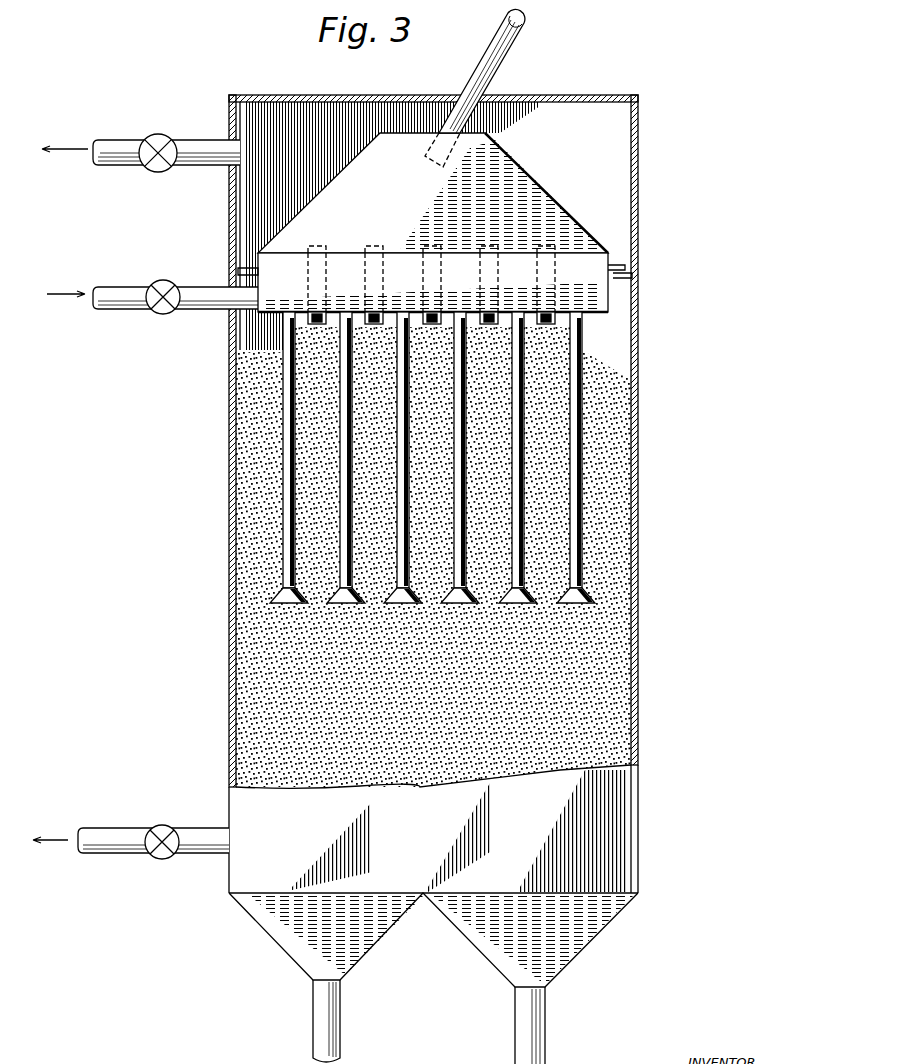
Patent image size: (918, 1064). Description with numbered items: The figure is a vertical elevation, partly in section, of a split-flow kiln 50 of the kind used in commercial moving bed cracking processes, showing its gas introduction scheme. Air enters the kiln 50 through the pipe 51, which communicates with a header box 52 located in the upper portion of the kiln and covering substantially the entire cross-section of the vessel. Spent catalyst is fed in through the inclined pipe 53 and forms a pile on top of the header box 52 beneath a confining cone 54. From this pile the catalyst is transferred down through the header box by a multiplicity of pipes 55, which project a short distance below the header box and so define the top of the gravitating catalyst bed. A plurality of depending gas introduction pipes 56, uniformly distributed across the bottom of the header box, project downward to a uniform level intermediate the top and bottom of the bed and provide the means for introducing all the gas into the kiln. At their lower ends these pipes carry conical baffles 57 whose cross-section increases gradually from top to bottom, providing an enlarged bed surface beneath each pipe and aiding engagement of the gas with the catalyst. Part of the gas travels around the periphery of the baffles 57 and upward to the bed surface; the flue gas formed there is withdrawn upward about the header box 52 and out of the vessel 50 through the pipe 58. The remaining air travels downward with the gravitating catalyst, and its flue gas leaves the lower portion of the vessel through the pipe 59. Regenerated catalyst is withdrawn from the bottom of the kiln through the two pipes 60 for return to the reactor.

The kiln 50 is at (230, 557).
The pipe 51 is at (113, 310).
The header box 52 is at (603, 253).
The pipe 53 is at (506, 46).
The confining cone 54 is at (563, 222).
The pipes 55 is at (423, 242).
The gas introduction pipes 56 is at (518, 485).
The conical baffles 57 is at (593, 597).
The pipe 58 is at (126, 166).
The pipe 59 is at (190, 855).
The pipes 60 is at (320, 1020).